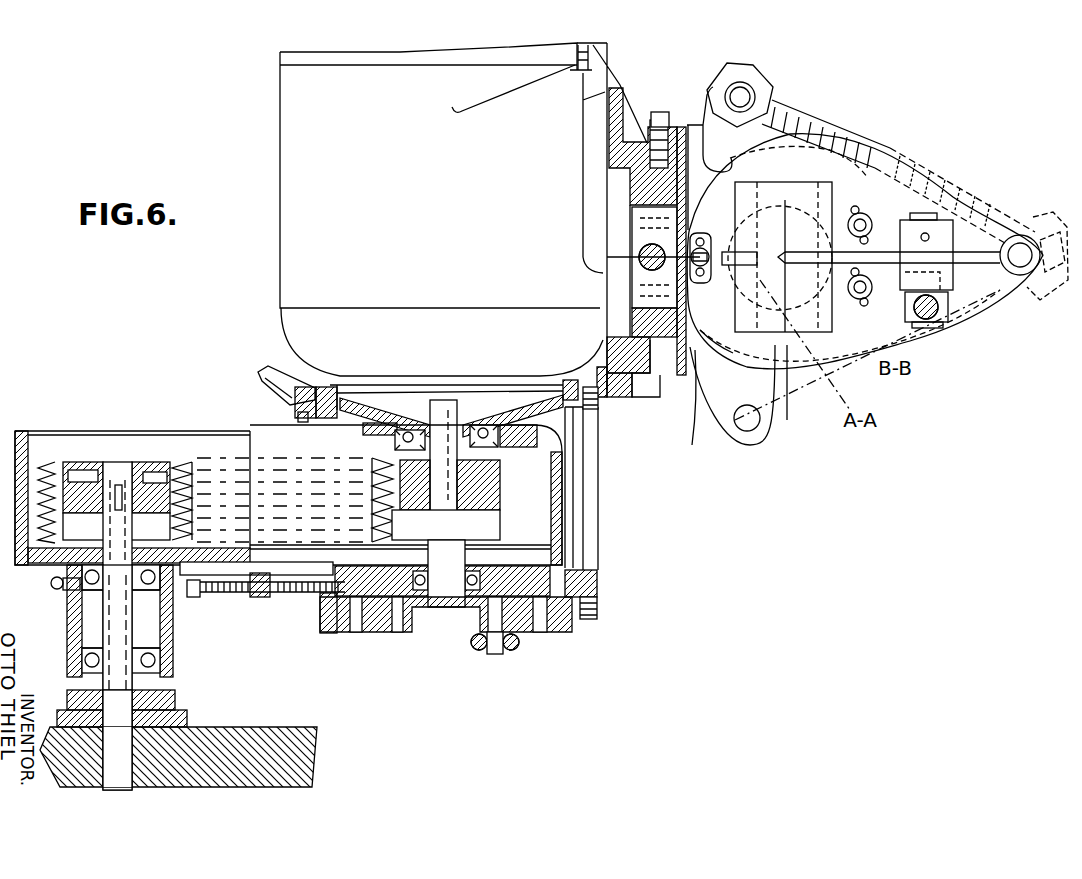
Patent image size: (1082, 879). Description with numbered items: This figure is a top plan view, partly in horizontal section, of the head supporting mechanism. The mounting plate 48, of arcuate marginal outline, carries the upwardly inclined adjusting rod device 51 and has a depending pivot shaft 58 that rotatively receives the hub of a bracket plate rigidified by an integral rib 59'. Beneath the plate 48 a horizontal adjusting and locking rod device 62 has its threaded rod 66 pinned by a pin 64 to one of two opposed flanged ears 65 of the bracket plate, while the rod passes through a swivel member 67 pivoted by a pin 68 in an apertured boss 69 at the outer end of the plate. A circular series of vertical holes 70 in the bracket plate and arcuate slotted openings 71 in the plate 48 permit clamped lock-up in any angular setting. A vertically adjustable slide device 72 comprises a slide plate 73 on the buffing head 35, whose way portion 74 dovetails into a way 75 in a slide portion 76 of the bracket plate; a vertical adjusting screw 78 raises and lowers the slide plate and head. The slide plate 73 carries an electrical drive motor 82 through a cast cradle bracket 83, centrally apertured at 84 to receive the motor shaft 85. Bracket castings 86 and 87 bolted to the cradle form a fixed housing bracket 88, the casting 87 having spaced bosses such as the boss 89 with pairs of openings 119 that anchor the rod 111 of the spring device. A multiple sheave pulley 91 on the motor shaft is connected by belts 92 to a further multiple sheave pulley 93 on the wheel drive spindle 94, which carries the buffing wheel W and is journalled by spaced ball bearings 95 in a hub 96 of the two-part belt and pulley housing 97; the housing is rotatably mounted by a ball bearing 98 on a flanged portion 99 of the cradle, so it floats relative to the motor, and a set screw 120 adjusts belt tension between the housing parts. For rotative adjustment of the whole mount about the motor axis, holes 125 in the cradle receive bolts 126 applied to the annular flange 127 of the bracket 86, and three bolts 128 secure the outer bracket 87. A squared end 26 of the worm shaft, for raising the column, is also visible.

The electrical drive motor 82 is at (300, 240).
The slide plate 73 is at (628, 193).
The way portion 74 is at (673, 370).
The way 75 is at (660, 350).
The vertically adjustable slide device 72 is at (649, 386).
The vertical adjusting screw 78 is at (640, 273).
The arcuate slotted openings 71 is at (712, 268).
The mounting plate 48 is at (966, 345).
The threaded rod 66 is at (883, 170).
The swivel member 67 is at (975, 310).
The adjusting and locking rod device 62 is at (857, 139).
The pin 64 is at (752, 90).
The flanged ears 65 is at (708, 115).
The vertical holes 70 is at (711, 352).
The slide portion 76 is at (695, 420).
The pivot shaft 58 is at (783, 257).
The rib 59' is at (863, 247).
The adjusting rod device 51 is at (866, 302).
The apertured boss 69 is at (1025, 237).
The pin 68 is at (1028, 275).
The squared end 26 is at (302, 423).
The holes 125 is at (316, 393).
The annular flange 127 is at (340, 400).
The cradle bracket 83 is at (380, 413).
The ball bearing 98 is at (410, 430).
The flanged portion 99 is at (507, 447).
The central aperture 84 is at (437, 410).
The motor shaft 85 is at (470, 430).
The multiple sheave pulley 91 is at (487, 512).
The belt and pulley housing 97 is at (32, 455).
The belts 92 is at (215, 487).
The multiple sheave pulley 93 is at (88, 470).
The wheel drive spindle 94 is at (88, 562).
The hub 96 is at (68, 640).
The ball bearings 95 is at (175, 605).
The buffing wheel W is at (315, 730).
The bracket casting 87 is at (441, 600).
The fixed housing bracket 88 is at (378, 647).
The openings 119 is at (398, 633).
The rod 111 is at (483, 654).
The boss 89 is at (325, 635).
The set screw 120 is at (285, 598).
The buffing head 35 is at (608, 415).
The bolts 126 is at (598, 415).
The bracket casting 86 is at (595, 572).
The bolts 128 is at (600, 610).